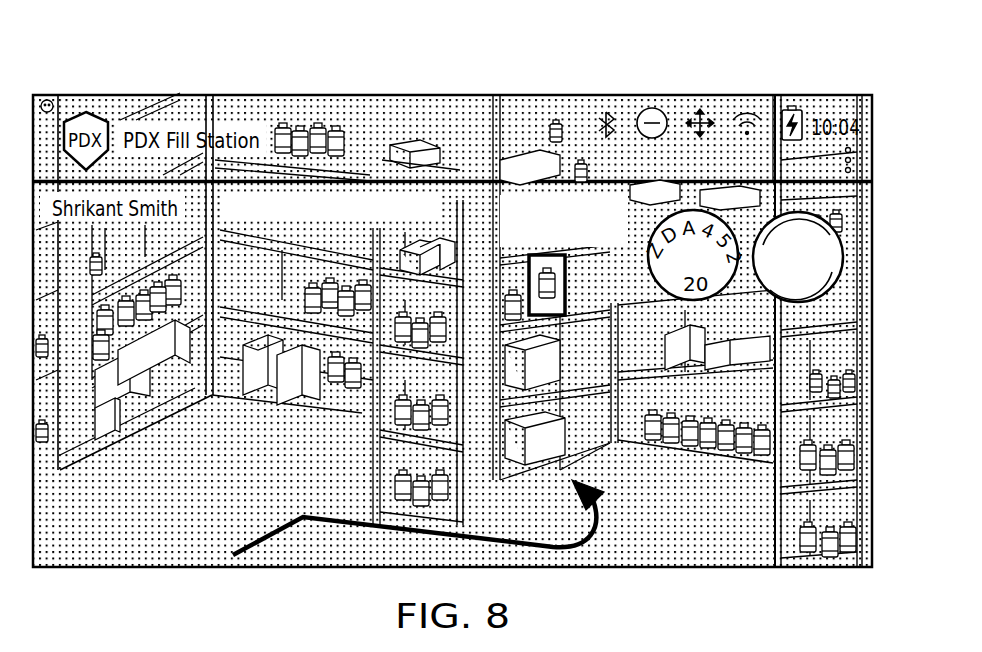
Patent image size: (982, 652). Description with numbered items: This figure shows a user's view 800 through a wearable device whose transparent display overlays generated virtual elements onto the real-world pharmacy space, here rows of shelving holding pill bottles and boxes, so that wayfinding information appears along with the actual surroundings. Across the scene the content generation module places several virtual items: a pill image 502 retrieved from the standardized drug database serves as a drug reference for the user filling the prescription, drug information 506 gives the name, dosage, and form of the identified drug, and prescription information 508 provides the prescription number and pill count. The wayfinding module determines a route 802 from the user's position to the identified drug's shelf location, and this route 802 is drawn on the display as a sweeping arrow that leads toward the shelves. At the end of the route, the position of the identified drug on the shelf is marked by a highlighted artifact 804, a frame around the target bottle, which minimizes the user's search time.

The user's view 800 is at (268, 62).
The pill image 502 is at (816, 257).
The drug information 506 is at (260, 219).
The prescription information 508 is at (530, 186).
The route 802 is at (607, 508).
The highlighted artifact 804 is at (566, 292).